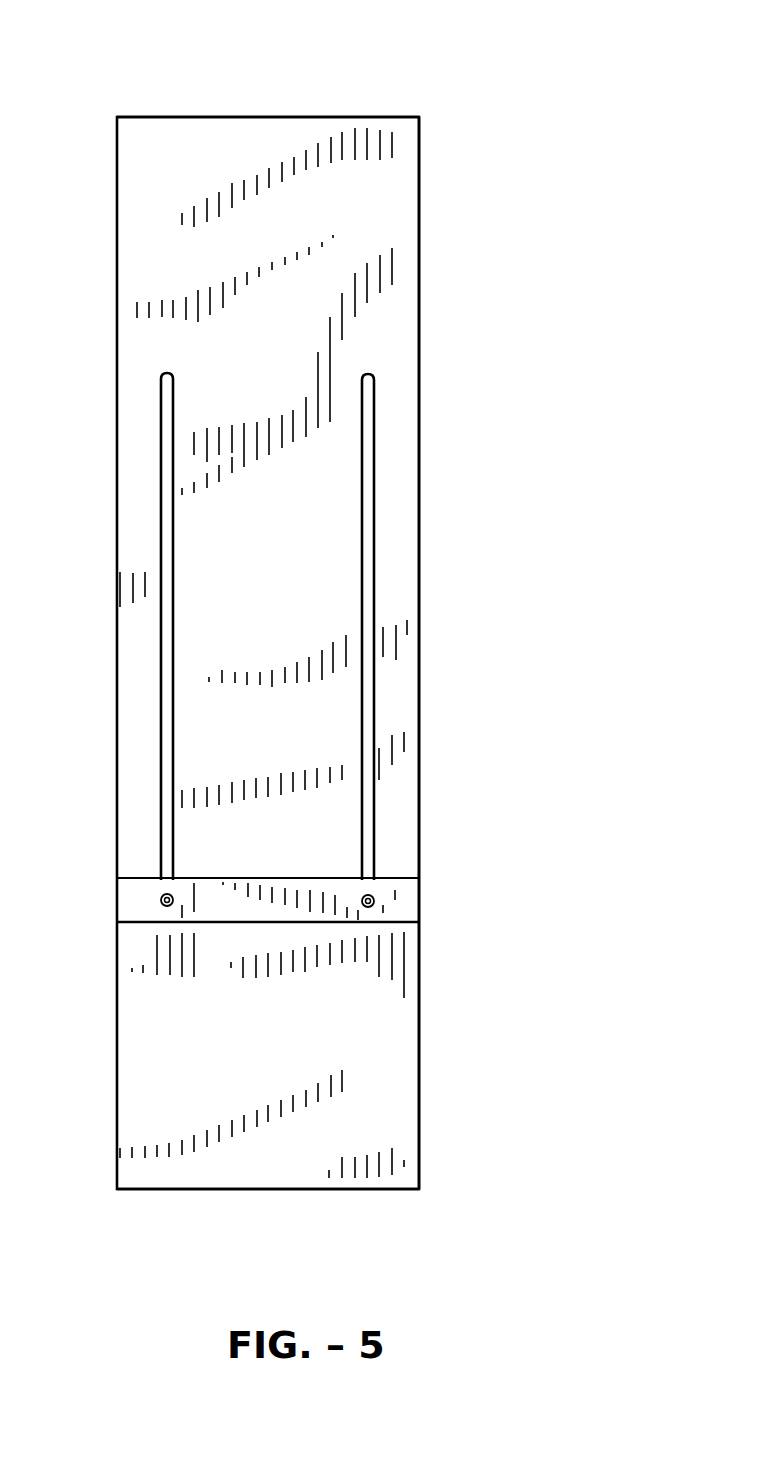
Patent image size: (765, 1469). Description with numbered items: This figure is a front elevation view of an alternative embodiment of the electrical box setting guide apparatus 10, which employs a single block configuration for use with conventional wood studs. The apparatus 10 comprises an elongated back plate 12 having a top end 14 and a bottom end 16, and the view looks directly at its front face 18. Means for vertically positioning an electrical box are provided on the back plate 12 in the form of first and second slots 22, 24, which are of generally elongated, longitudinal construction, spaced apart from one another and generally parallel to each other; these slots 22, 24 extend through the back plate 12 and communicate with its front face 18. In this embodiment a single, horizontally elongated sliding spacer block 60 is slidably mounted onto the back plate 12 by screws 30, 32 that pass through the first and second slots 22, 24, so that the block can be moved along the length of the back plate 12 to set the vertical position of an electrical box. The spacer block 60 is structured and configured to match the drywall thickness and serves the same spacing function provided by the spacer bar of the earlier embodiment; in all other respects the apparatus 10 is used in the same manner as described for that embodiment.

The electrical box setting guide apparatus 10 is at (520, 55).
The back plate 12 is at (419, 197).
The top end 14 is at (208, 100).
The bottom end 16 is at (280, 1220).
The front face 18 is at (145, 222).
The first slot 22 is at (165, 737).
The second slot 24 is at (370, 607).
The screw 30 is at (162, 907).
The screw 32 is at (370, 892).
The sliding spacer block 60 is at (400, 915).